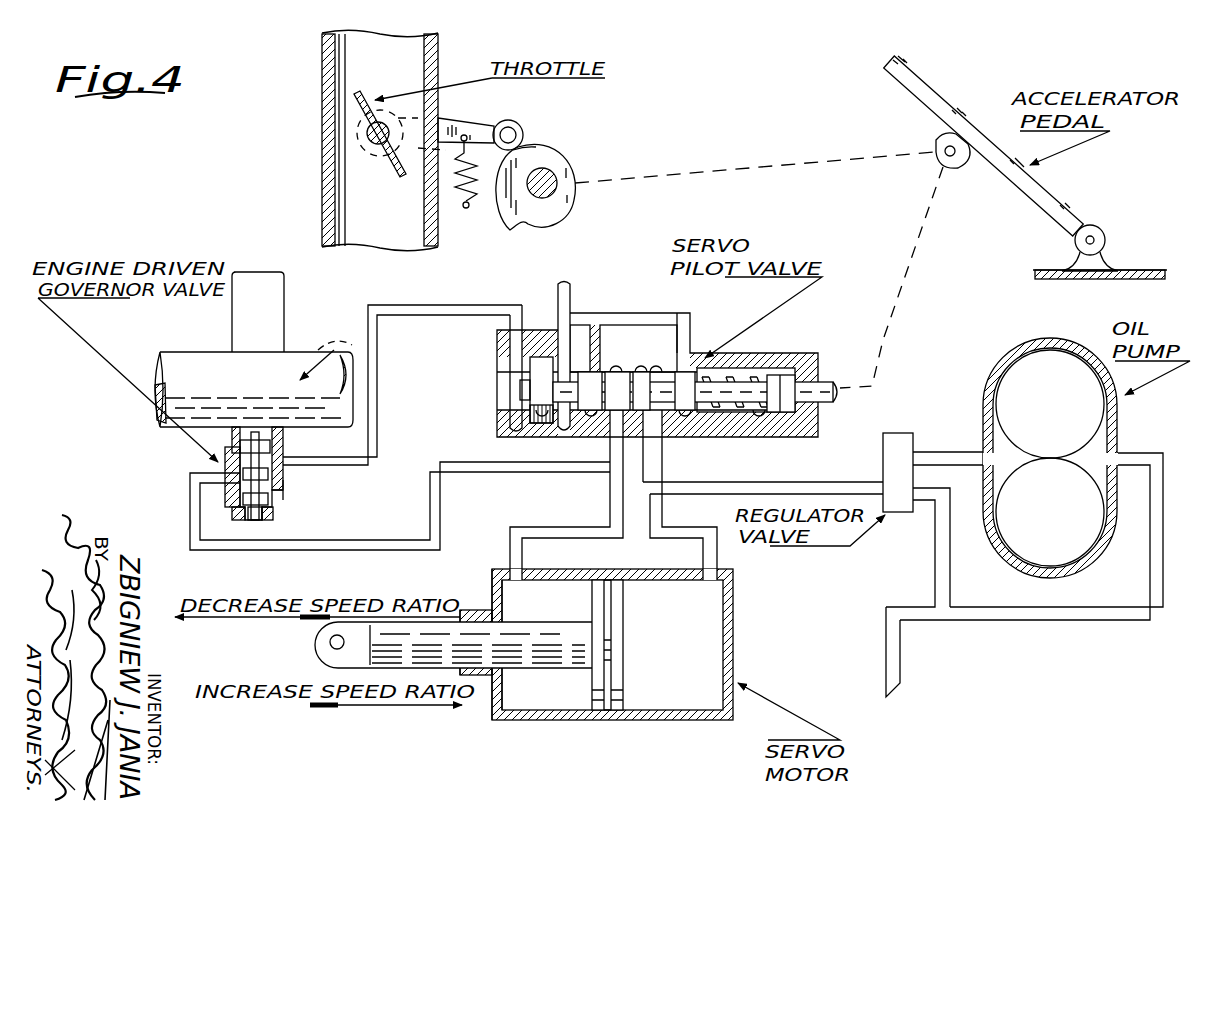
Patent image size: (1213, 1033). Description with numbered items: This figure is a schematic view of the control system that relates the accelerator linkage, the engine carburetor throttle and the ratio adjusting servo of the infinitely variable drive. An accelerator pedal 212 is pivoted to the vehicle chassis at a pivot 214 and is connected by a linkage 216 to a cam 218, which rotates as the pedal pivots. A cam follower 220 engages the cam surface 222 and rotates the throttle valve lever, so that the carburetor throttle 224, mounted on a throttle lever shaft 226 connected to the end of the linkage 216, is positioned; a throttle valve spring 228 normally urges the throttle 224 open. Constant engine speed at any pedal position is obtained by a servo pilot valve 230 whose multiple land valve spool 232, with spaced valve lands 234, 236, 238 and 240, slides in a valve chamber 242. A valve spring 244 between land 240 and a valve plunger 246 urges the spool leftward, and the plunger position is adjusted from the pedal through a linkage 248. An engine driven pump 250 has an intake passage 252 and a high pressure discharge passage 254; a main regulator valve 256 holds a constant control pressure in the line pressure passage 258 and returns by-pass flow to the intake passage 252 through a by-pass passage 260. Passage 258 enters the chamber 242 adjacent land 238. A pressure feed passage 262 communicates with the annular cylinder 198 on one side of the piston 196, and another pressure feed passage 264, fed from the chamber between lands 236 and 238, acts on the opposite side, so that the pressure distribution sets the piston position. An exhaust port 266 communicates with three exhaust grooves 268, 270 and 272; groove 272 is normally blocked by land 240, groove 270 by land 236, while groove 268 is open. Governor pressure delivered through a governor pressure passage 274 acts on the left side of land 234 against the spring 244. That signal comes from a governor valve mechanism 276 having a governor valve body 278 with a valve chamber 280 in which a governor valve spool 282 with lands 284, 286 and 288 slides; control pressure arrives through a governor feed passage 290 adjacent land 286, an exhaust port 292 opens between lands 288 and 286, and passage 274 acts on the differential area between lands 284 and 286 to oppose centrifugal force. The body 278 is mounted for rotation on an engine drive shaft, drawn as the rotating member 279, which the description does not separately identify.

The piston 196 is at (615, 700).
The annular cylinder 198 is at (648, 580).
The accelerator pedal 212 is at (946, 100).
The pivot 214 is at (1105, 236).
The linkage 216 is at (753, 168).
The cam 218 is at (568, 184).
The cam follower 220 is at (520, 123).
The cam surface 222 is at (538, 147).
The carburetor throttle 224 is at (398, 148).
The throttle lever shaft 226 is at (368, 134).
The throttle valve spring 228 is at (470, 195).
The servo pilot valve 230 is at (712, 360).
The multiple land valve spool 232 is at (614, 380).
The valve land 234 is at (542, 428).
The valve land 236 is at (592, 428).
The valve land 238 is at (640, 372).
The valve land 240 is at (686, 412).
The valve chamber 242 is at (585, 372).
The valve spring 244 is at (762, 408).
The valve plunger 246 is at (792, 378).
The linkage 248 is at (904, 297).
The engine driven pump 250 is at (985, 410).
The intake passage 252 is at (950, 620).
The high pressure discharge passage 254 is at (950, 452).
The main regulator valve 256 is at (908, 515).
The line pressure passage 258 is at (702, 494).
The by-pass passage 260 is at (935, 578).
The pressure feed passage 262 is at (665, 468).
The pressure feed passage 264 is at (580, 527).
The exhaust port 266 is at (556, 292).
The exhaust groove 268 is at (528, 365).
The exhaust groove 270 is at (598, 352).
The exhaust groove 272 is at (684, 362).
The governor pressure passage 274 is at (412, 312).
The governor valve mechanism 276 is at (290, 447).
The governor valve body 278 is at (283, 490).
The engine driven shaft 279 is at (200, 352).
The valve chamber 280 is at (268, 477).
The governor valve spool 282 is at (283, 502).
The valve land 284 is at (250, 440).
The valve land 286 is at (225, 472).
The valve land 288 is at (255, 520).
The governor feed passage 290 is at (320, 550).
The exhaust port 292 is at (232, 500).